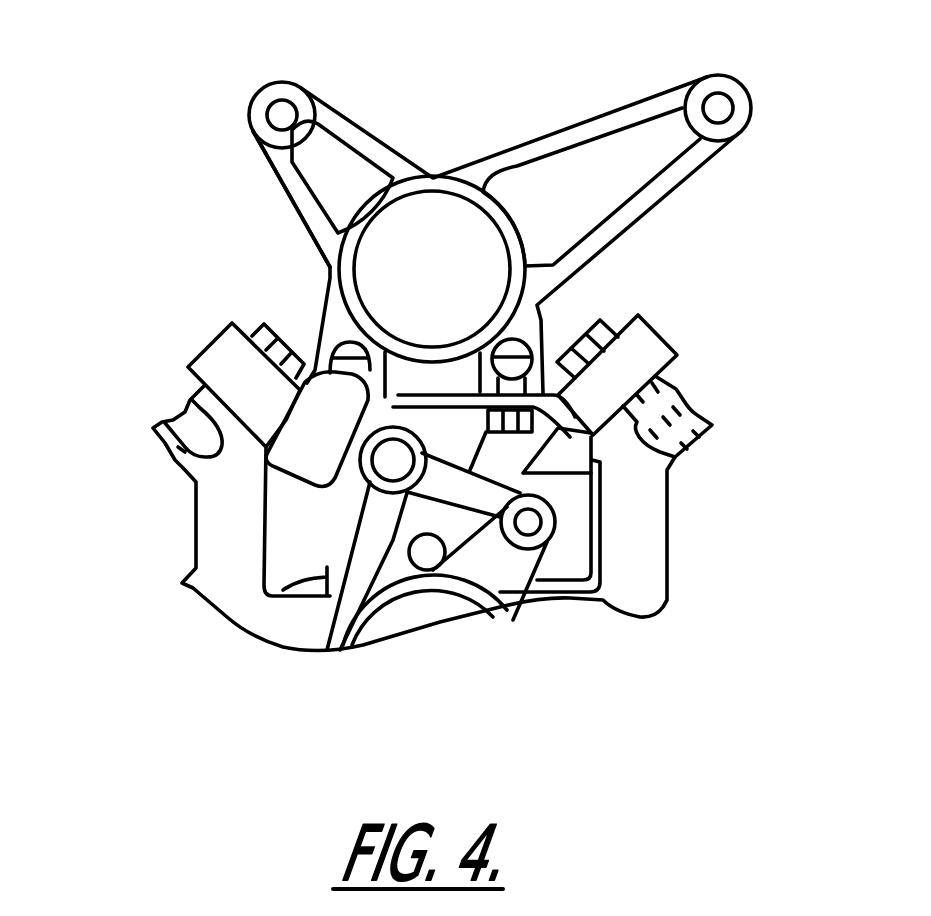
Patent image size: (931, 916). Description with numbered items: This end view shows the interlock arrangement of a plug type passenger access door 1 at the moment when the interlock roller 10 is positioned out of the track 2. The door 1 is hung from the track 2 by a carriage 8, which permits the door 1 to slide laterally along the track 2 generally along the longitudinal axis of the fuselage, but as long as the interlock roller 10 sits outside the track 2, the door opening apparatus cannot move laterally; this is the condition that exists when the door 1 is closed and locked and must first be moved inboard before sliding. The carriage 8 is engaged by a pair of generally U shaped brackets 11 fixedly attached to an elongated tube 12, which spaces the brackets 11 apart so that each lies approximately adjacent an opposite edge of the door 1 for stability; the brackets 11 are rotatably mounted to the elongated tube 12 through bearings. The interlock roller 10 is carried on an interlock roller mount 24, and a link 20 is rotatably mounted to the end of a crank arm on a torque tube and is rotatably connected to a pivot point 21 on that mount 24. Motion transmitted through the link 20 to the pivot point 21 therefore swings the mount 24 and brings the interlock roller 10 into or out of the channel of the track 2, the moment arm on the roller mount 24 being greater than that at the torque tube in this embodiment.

The door 1 is at (512, 147).
The track 2 is at (600, 543).
The carriage 8 is at (280, 177).
The interlock roller 10 is at (294, 415).
The U shaped brackets 11 is at (670, 515).
The elongated tube 12 is at (337, 613).
The link 20 is at (285, 596).
The pivot point 21 is at (355, 480).
The interlock roller mount 24 is at (530, 338).